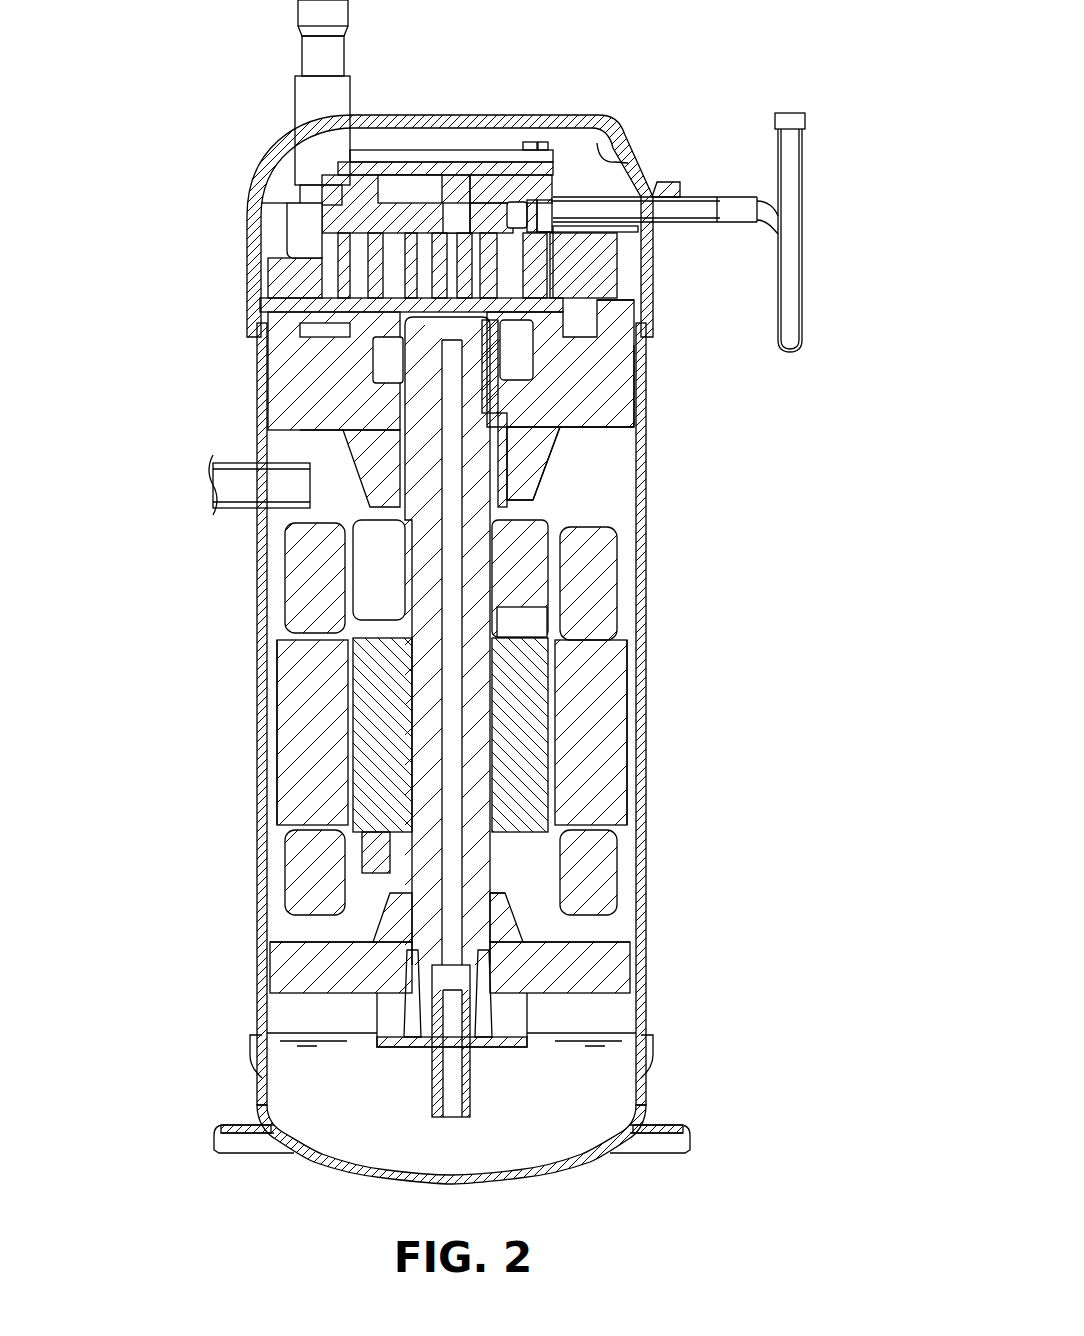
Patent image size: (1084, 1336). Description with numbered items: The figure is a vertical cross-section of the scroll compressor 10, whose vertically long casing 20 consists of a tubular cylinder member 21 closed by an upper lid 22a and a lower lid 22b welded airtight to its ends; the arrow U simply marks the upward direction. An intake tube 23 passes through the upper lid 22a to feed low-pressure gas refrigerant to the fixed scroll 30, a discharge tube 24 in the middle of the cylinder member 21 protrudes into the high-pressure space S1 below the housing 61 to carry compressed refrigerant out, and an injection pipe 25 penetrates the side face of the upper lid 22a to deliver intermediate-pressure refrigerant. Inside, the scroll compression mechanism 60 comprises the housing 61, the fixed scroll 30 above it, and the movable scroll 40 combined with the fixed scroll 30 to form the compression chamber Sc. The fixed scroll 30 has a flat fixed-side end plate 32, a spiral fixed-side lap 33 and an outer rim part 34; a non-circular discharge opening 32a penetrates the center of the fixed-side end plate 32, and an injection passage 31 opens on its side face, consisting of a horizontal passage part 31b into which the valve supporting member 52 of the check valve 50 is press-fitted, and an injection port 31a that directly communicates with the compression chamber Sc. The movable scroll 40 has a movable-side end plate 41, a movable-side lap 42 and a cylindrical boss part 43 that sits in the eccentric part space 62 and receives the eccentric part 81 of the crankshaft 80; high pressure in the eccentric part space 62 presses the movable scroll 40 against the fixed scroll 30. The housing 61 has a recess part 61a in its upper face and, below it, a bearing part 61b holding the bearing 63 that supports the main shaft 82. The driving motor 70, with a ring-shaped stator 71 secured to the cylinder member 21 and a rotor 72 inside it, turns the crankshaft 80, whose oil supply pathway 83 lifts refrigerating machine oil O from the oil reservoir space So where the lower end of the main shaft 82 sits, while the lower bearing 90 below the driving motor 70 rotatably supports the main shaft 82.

The scroll compressor 10 is at (740, 53).
The casing 20 is at (656, 368).
The cylinder member 21 is at (646, 726).
The upper lid 22a is at (545, 117).
The lower lid 22b is at (646, 1098).
The intake tube 23 is at (352, 12).
The discharge tube 24 is at (240, 510).
The injection pipe 25 is at (703, 188).
The fixed scroll 30 is at (568, 170).
The injection passage 31 is at (498, 196).
The injection port 31a is at (560, 237).
The horizontal passage part 31b is at (512, 194).
The fixed-side end plate 32 is at (400, 200).
The discharge opening 32a is at (445, 213).
The fixed-side lap 33 is at (317, 265).
The outer rim part 34 is at (290, 265).
The movable scroll 40 is at (625, 412).
The movable-side end plate 41 is at (268, 306).
The movable-side lap 42 is at (640, 320).
The boss part 43 is at (618, 445).
The check valve 50 is at (540, 195).
The valve supporting member 52 is at (560, 187).
The scroll compression mechanism 60 is at (278, 220).
The housing 61 is at (303, 436).
The recess part 61a is at (612, 447).
The bearing part 61b is at (618, 490).
The eccentric part space 62 is at (640, 393).
The bearing 63 is at (620, 590).
The driving motor 70 is at (278, 612).
The stator 71 is at (280, 732).
The rotor 72 is at (353, 733).
The crankshaft 80 is at (408, 885).
The eccentric part 81 is at (390, 405).
The main shaft 82 is at (495, 880).
The oil supply pathway 83 is at (470, 900).
The lower bearing 90 is at (370, 932).
The compression chamber Sc is at (630, 280).
The high-pressure space S1 is at (356, 503).
The oil reservoir space So is at (326, 1125).
The refrigerating machine oil O is at (293, 1100).
The upward direction U is at (785, 965).